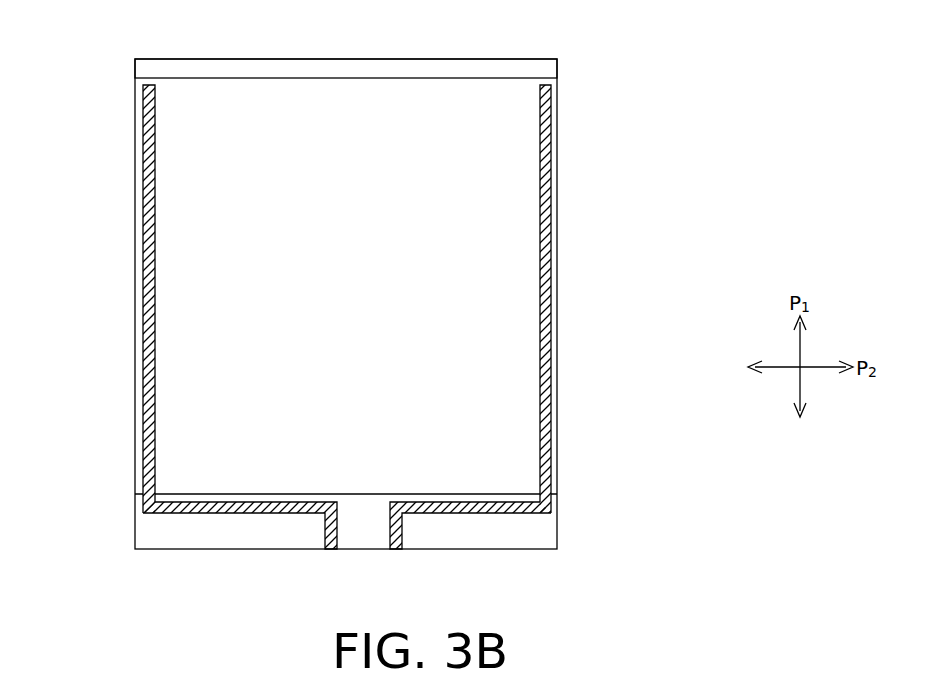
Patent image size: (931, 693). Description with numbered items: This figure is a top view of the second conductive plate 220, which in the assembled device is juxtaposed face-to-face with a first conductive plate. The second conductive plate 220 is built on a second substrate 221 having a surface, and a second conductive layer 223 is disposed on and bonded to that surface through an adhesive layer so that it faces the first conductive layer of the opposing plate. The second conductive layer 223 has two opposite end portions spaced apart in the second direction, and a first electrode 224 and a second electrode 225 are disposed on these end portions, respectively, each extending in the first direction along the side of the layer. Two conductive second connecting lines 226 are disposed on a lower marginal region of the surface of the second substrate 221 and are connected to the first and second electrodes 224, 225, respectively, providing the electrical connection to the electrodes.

The second conductive plate 220 is at (406, 310).
The second substrate 221 is at (135, 525).
The second conductive layer 223 is at (472, 77).
The first electrode 224 is at (150, 218).
The second electrode 225 is at (546, 208).
The second connecting lines 226 is at (228, 513).